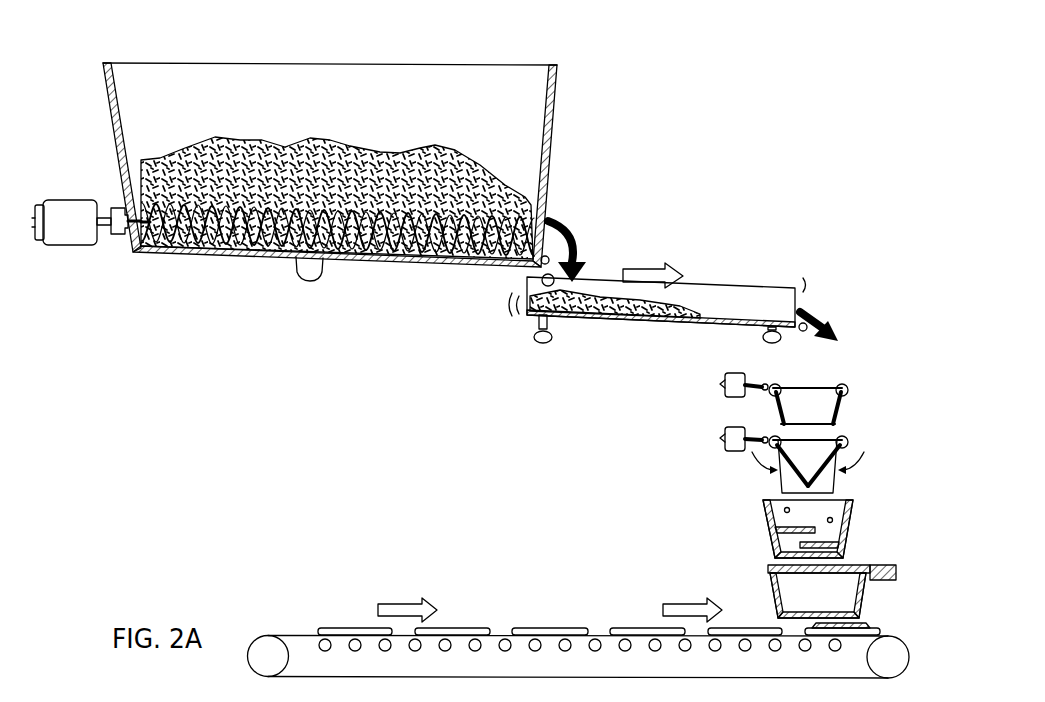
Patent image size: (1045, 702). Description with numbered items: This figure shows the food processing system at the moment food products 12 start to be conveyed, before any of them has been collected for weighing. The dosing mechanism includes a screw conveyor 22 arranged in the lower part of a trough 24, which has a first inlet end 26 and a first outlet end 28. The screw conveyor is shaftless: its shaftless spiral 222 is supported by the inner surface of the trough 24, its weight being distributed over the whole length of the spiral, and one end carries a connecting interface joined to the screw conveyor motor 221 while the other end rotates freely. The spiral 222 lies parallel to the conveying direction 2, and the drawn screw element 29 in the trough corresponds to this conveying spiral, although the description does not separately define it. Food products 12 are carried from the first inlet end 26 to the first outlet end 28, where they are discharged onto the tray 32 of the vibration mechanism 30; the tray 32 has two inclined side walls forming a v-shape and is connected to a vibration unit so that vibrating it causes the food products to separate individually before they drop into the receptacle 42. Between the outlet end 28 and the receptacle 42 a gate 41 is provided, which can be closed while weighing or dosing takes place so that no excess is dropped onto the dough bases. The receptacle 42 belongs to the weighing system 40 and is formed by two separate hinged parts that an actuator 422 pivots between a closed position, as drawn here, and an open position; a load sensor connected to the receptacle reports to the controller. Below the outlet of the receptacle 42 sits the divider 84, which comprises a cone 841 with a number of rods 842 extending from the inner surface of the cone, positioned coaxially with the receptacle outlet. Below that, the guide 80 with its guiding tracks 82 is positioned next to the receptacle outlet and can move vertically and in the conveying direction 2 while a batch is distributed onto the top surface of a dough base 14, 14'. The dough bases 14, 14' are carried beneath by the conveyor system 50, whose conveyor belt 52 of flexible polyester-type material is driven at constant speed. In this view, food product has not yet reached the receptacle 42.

The conveying direction 2 is at (406, 598).
The food products 12 is at (184, 142).
The dough base 14 is at (550, 575).
The dough base 14' is at (877, 627).
The screw conveyor 22 is at (585, 80).
The trough 24 is at (118, 86).
The first inlet end 26 is at (259, 56).
The first outlet end 28 is at (548, 205).
The screw conveyor 29 is at (326, 248).
The vibration mechanism 30 is at (845, 210).
The tray 32 is at (752, 284).
The weighing system 40 is at (730, 482).
The gate 41 is at (838, 413).
The receptacle 42 is at (838, 480).
The conveyor system 50 is at (207, 586).
The conveyor belt 52 is at (280, 634).
The guide 80 is at (735, 572).
The guiding tracks 82 is at (867, 603).
The divider 84 is at (735, 520).
The screw conveyor motor 221 is at (75, 199).
The shaftless spiral 222 is at (296, 257).
The actuator 422 is at (733, 372).
The cone 841 is at (852, 522).
The rods 842 is at (809, 523).